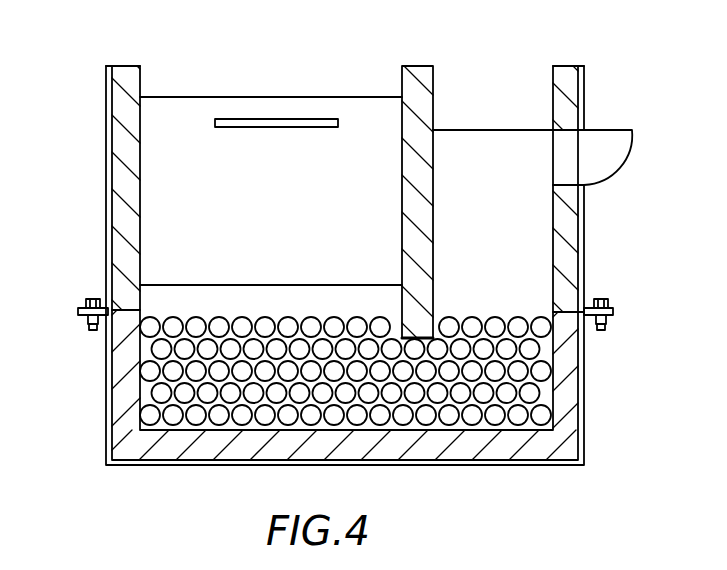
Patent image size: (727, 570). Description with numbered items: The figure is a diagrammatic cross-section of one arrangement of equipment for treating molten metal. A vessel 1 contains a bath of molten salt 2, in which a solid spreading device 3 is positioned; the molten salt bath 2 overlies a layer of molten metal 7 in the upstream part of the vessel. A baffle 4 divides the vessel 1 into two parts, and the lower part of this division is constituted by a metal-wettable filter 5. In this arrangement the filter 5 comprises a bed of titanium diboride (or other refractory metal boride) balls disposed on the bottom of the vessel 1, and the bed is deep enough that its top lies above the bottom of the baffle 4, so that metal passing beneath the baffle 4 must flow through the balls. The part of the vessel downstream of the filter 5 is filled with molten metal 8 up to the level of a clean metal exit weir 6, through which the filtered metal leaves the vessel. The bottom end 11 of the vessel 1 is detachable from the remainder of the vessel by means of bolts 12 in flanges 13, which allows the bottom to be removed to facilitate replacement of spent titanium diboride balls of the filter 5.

The vessel 1 is at (128, 208).
The bath of molten salt 2 is at (158, 163).
The solid spreading device 3 is at (232, 119).
The baffle 4 is at (421, 80).
The metal-wettable filter 5 is at (490, 373).
The clean metal exit weir 6 is at (603, 153).
The layer of molten metal 7 is at (165, 296).
The molten metal 8 is at (485, 145).
The bottom end 11 is at (125, 378).
The bolts 12 is at (80, 304).
The flanges 13 is at (86, 324).